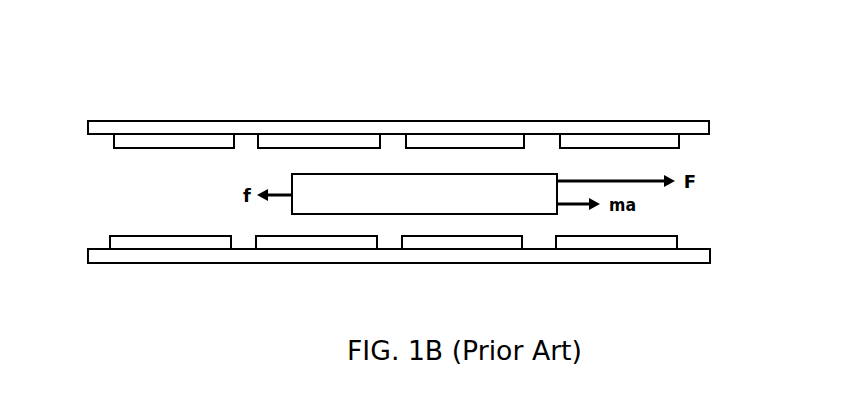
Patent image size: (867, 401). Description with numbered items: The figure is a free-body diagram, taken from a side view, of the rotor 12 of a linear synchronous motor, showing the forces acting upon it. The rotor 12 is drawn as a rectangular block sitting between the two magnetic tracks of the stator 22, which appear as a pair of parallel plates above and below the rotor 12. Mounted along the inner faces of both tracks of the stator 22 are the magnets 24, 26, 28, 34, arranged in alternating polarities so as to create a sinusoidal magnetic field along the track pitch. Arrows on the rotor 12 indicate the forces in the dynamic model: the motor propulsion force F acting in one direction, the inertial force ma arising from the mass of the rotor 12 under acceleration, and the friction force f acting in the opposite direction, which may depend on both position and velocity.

The rotor 12 is at (424, 194).
The stator 22 is at (113, 134).
The magnet 24 is at (168, 139).
The magnet 26 is at (306, 140).
The magnet 28 is at (457, 140).
The magnet 34 is at (612, 140).